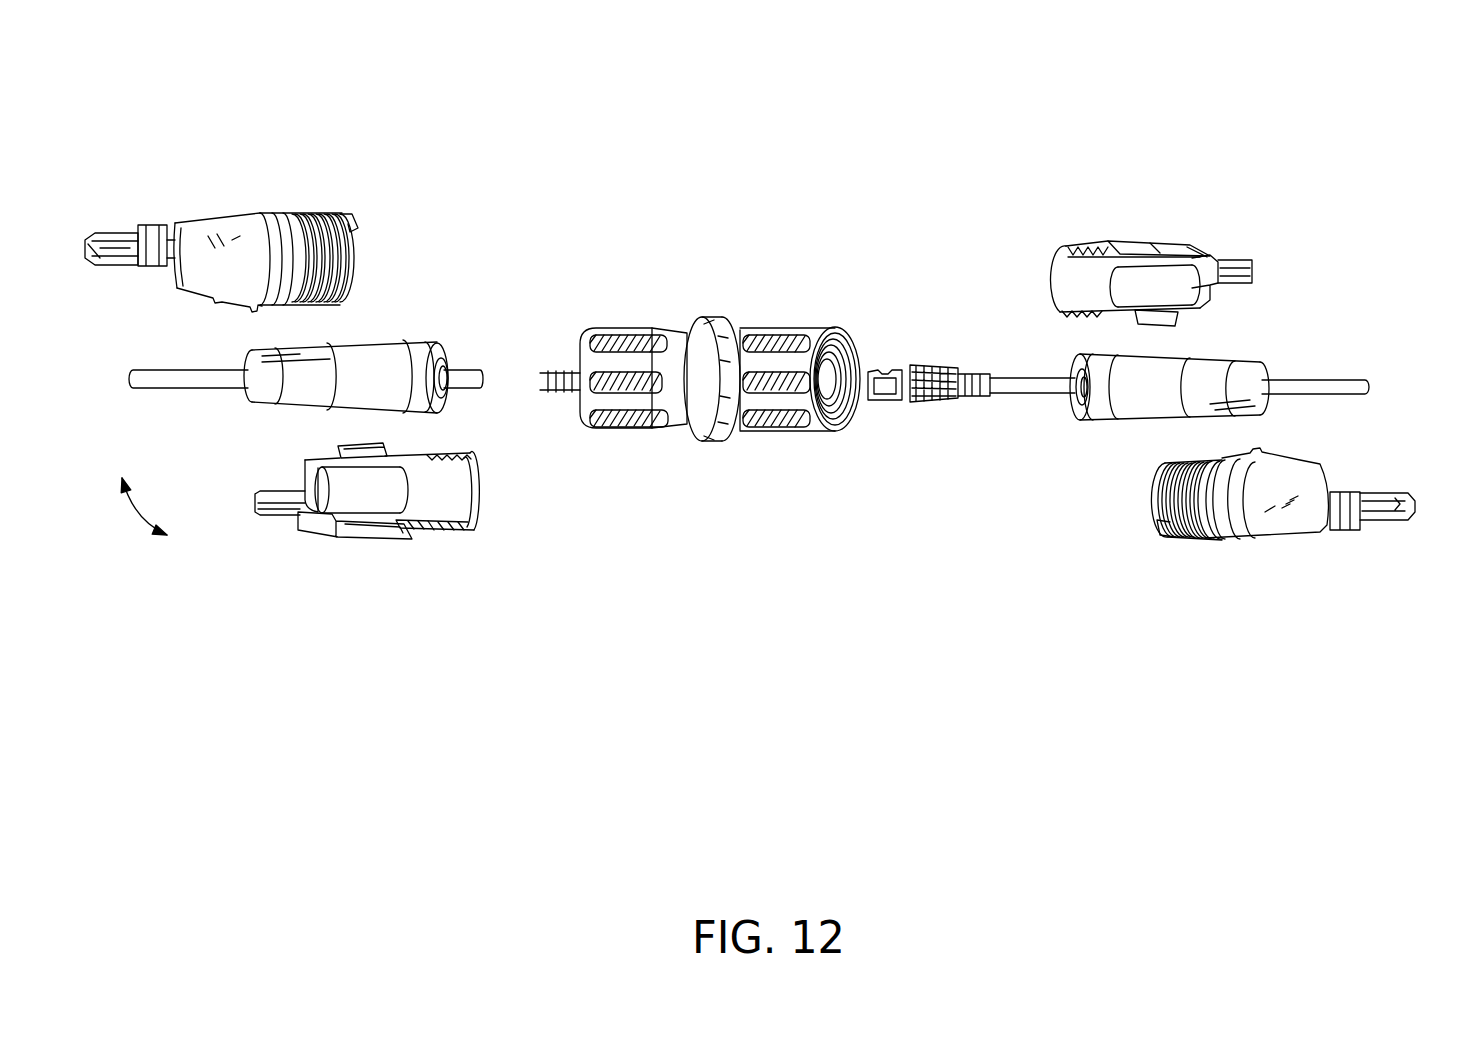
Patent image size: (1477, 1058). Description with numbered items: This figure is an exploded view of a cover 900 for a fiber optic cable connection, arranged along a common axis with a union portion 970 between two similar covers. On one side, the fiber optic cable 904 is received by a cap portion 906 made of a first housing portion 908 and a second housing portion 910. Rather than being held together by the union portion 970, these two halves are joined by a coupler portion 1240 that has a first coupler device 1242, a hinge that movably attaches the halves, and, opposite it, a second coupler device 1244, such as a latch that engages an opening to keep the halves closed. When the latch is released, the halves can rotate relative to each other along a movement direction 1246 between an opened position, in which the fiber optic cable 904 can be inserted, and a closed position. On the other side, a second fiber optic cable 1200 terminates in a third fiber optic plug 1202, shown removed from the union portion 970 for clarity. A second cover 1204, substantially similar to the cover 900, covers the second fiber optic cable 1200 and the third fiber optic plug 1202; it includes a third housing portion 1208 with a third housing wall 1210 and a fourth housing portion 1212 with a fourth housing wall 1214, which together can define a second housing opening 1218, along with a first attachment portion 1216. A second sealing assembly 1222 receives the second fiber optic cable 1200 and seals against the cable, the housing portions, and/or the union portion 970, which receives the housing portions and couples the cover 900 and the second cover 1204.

The cover 900 is at (267, 128).
The fiber optic cable 904 is at (187, 370).
The cap portion 906 is at (368, 165).
The first housing portion 908 is at (278, 213).
The second housing portion 910 is at (402, 540).
The union portion 970 is at (715, 313).
The second fiber optic cable 1200 is at (1303, 378).
The third fiber optic plug 1202 is at (885, 367).
The second cover 1204 is at (1207, 162).
The third housing portion 1208 is at (1117, 237).
The third housing wall 1210 is at (1183, 250).
The fourth housing portion 1212 is at (1253, 537).
The fourth housing wall 1214 is at (1315, 462).
The first attachment portion 1216 is at (1170, 567).
The second housing opening 1218 is at (1155, 500).
The second sealing assembly 1222 is at (1213, 363).
The coupler portion 1240 is at (318, 557).
The first coupler device 1242 is at (352, 538).
The second coupler device 1244 is at (338, 450).
The movement direction 1246 is at (143, 525).